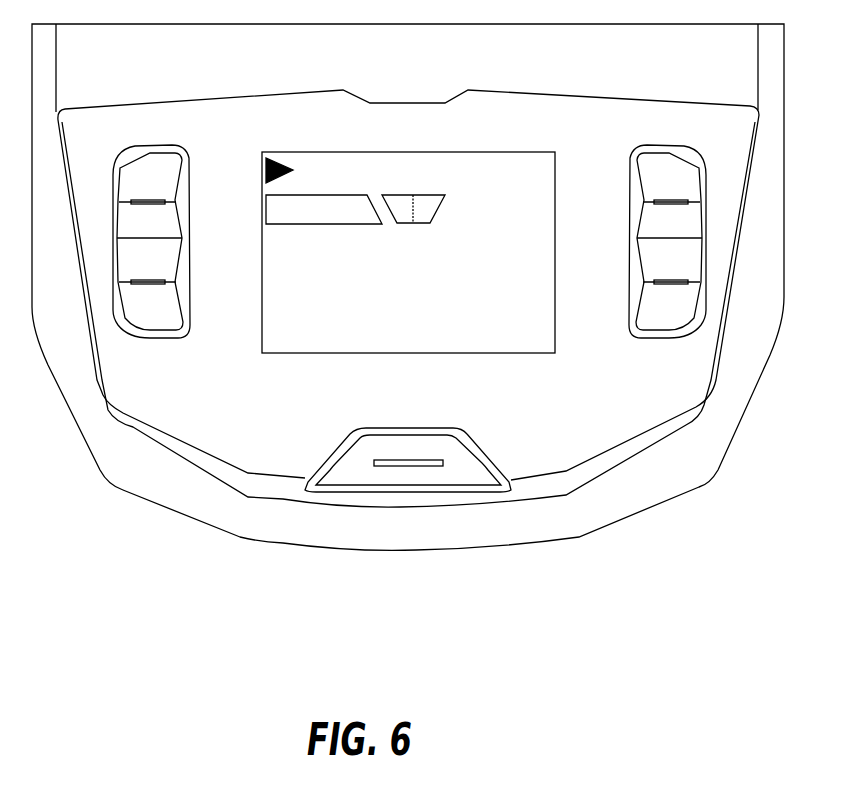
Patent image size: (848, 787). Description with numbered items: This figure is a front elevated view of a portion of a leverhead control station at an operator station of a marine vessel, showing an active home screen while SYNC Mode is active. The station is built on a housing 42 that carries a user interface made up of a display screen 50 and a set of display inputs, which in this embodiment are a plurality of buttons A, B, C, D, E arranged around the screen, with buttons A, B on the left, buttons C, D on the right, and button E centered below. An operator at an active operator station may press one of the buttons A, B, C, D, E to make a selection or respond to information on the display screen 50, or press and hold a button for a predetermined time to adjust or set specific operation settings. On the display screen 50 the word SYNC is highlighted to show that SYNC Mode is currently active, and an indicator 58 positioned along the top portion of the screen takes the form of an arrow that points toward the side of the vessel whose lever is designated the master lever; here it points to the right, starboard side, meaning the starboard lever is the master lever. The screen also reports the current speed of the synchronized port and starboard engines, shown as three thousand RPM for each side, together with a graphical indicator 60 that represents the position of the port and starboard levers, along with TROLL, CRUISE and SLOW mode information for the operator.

The housing 42 is at (683, 466).
The display screen 50 is at (500, 155).
The indicator 58 is at (278, 157).
The graphical indicator 60 is at (398, 200).
The button A is at (149, 200).
The button B is at (148, 285).
The button C is at (670, 200).
The button D is at (671, 285).
The button E is at (341, 478).